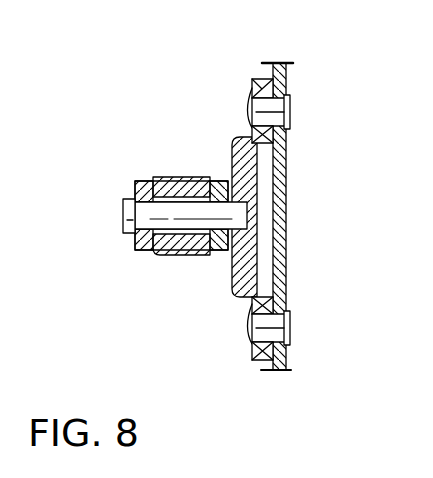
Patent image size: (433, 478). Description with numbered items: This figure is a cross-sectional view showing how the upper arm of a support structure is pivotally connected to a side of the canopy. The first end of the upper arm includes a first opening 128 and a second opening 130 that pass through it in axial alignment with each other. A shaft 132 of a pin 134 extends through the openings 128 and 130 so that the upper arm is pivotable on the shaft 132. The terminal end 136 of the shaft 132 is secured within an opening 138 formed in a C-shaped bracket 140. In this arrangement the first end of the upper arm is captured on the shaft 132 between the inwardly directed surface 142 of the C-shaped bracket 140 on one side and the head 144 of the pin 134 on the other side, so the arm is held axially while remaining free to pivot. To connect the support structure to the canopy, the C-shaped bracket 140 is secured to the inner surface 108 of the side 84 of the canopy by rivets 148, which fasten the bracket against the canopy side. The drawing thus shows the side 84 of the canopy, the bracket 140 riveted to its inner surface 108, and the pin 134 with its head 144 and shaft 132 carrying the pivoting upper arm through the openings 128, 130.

The side 84 is at (286, 352).
The inner surface 108 is at (267, 72).
The first opening 128 is at (167, 255).
The second opening 130 is at (172, 177).
The shaft 132 is at (146, 181).
The pin 134 is at (202, 255).
The terminal end 136 is at (286, 182).
The opening 138 is at (287, 207).
The C-shaped bracket 140 is at (258, 356).
The inwardly directed surface 142 is at (232, 200).
The head 144 is at (122, 202).
The rivets 148 is at (290, 111).